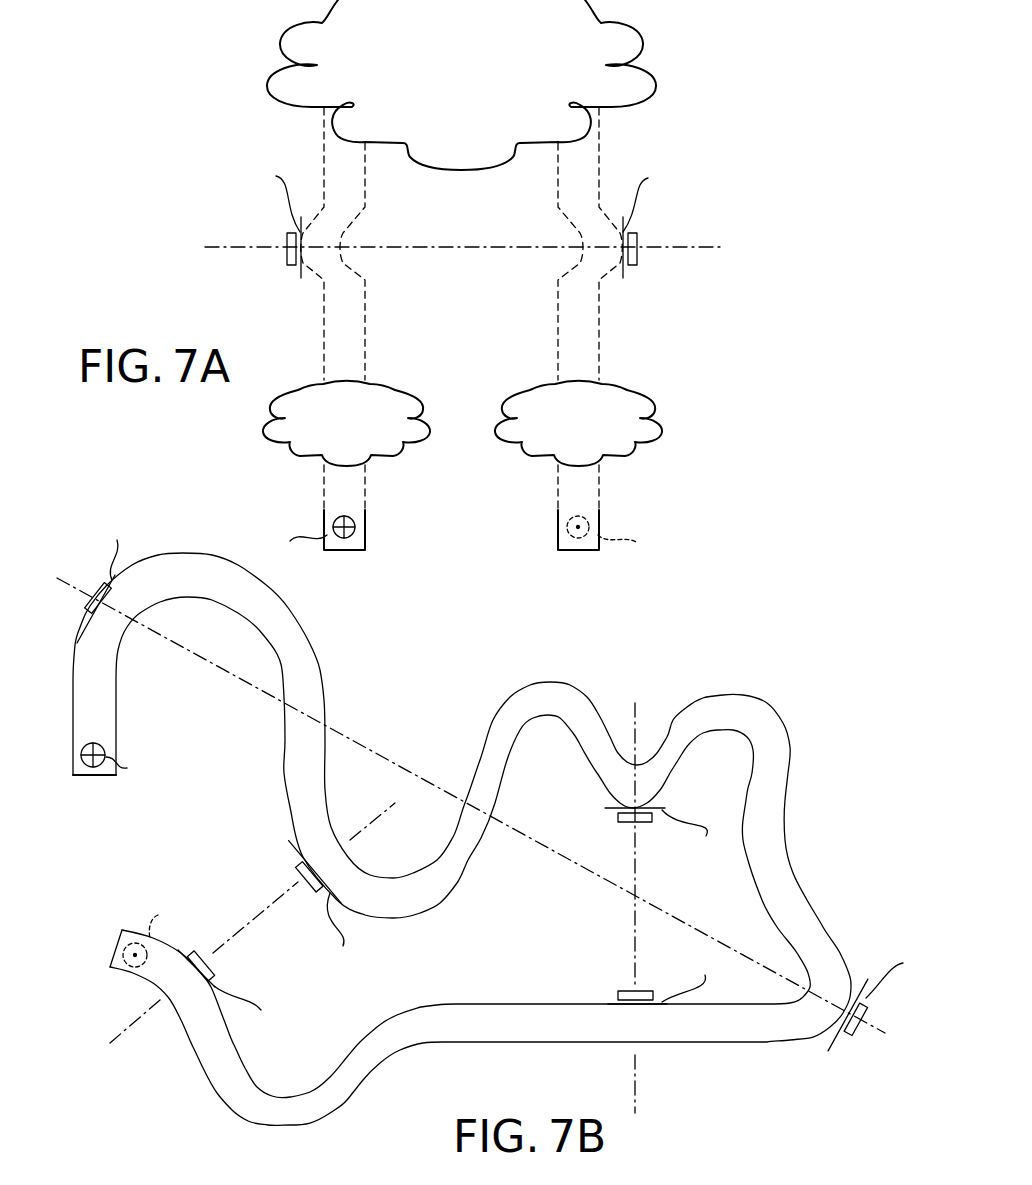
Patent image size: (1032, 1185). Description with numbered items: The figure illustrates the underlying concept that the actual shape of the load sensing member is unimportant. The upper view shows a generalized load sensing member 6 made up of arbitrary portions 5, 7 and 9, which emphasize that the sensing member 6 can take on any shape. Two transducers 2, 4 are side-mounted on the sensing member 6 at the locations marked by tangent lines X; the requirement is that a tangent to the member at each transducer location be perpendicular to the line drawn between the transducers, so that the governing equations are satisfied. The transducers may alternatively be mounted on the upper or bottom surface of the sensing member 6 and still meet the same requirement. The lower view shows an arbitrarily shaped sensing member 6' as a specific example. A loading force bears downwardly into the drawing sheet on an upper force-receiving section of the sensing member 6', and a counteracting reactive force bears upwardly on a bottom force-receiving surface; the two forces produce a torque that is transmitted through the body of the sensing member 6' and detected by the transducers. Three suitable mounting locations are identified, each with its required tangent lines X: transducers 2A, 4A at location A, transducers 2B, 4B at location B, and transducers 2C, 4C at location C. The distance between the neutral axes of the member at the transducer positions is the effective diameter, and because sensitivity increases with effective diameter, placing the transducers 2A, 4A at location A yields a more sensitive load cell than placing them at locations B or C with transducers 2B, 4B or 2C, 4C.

In FIG. 7A, the transducer 2 is at (287, 240).
In FIG. 7A, the transducer 4 is at (637, 240).
In FIG. 7A, the arbitrary portion 5 is at (628, 32).
In FIG. 7A, the load sensing member 6 is at (425, 294).
In FIG. 7A, the arbitrary portion 7 is at (391, 386).
In FIG. 7A, the arbitrary portion 9 is at (623, 386).
In FIG. 7B, the transducer 2A is at (92, 584).
In FIG. 7B, the transducer 2B is at (216, 969).
In FIG. 7B, the transducer 2C is at (645, 823).
In FIG. 7B, the transducer 4A is at (866, 1016).
In FIG. 7B, the transducer 4B is at (312, 890).
In FIG. 7B, the transducer 4C is at (645, 990).
In FIG. 7B, the arbitrarily shaped sensing member 6' is at (496, 820).